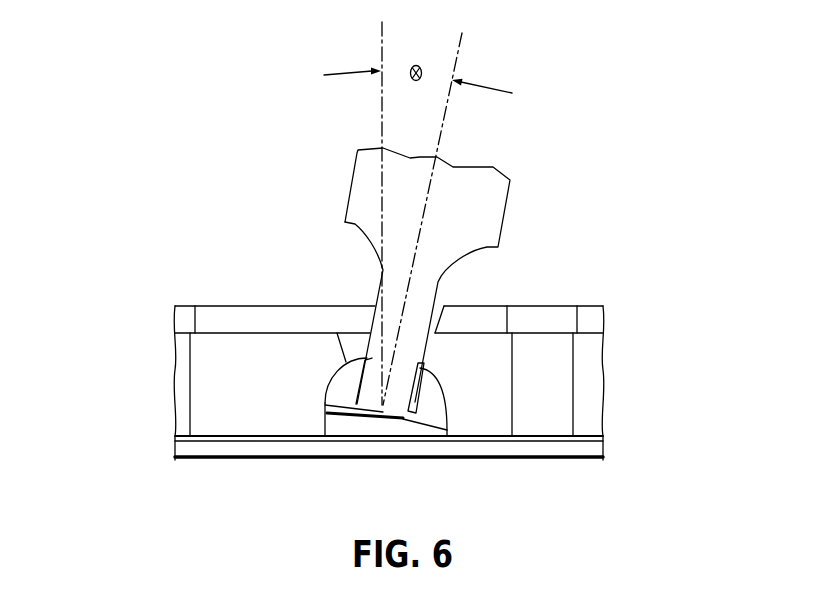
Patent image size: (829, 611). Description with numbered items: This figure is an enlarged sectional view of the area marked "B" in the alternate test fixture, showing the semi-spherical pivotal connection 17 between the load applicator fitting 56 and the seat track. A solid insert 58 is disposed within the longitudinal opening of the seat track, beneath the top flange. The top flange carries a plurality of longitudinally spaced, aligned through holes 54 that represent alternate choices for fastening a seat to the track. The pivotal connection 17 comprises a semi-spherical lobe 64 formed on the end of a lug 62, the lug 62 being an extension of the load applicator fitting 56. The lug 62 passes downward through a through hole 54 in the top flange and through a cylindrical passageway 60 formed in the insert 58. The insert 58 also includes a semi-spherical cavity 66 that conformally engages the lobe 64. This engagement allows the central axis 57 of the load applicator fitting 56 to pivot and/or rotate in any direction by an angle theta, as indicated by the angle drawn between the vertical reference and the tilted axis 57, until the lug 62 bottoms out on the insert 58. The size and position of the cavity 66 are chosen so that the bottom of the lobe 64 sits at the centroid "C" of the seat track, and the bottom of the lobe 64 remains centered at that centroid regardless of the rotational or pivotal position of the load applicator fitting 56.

The semi-spherical pivotal connection 17 is at (507, 275).
The through hole 54 is at (341, 317).
The load applicator fitting 56 is at (463, 194).
The central axis 57 is at (472, 41).
The solid insert 58 is at (585, 403).
The cylindrical passageway 60 is at (177, 363).
The lug 62 is at (397, 287).
The semi-spherical lobe 64 is at (428, 397).
The semi-spherical cavity 66 is at (401, 433).